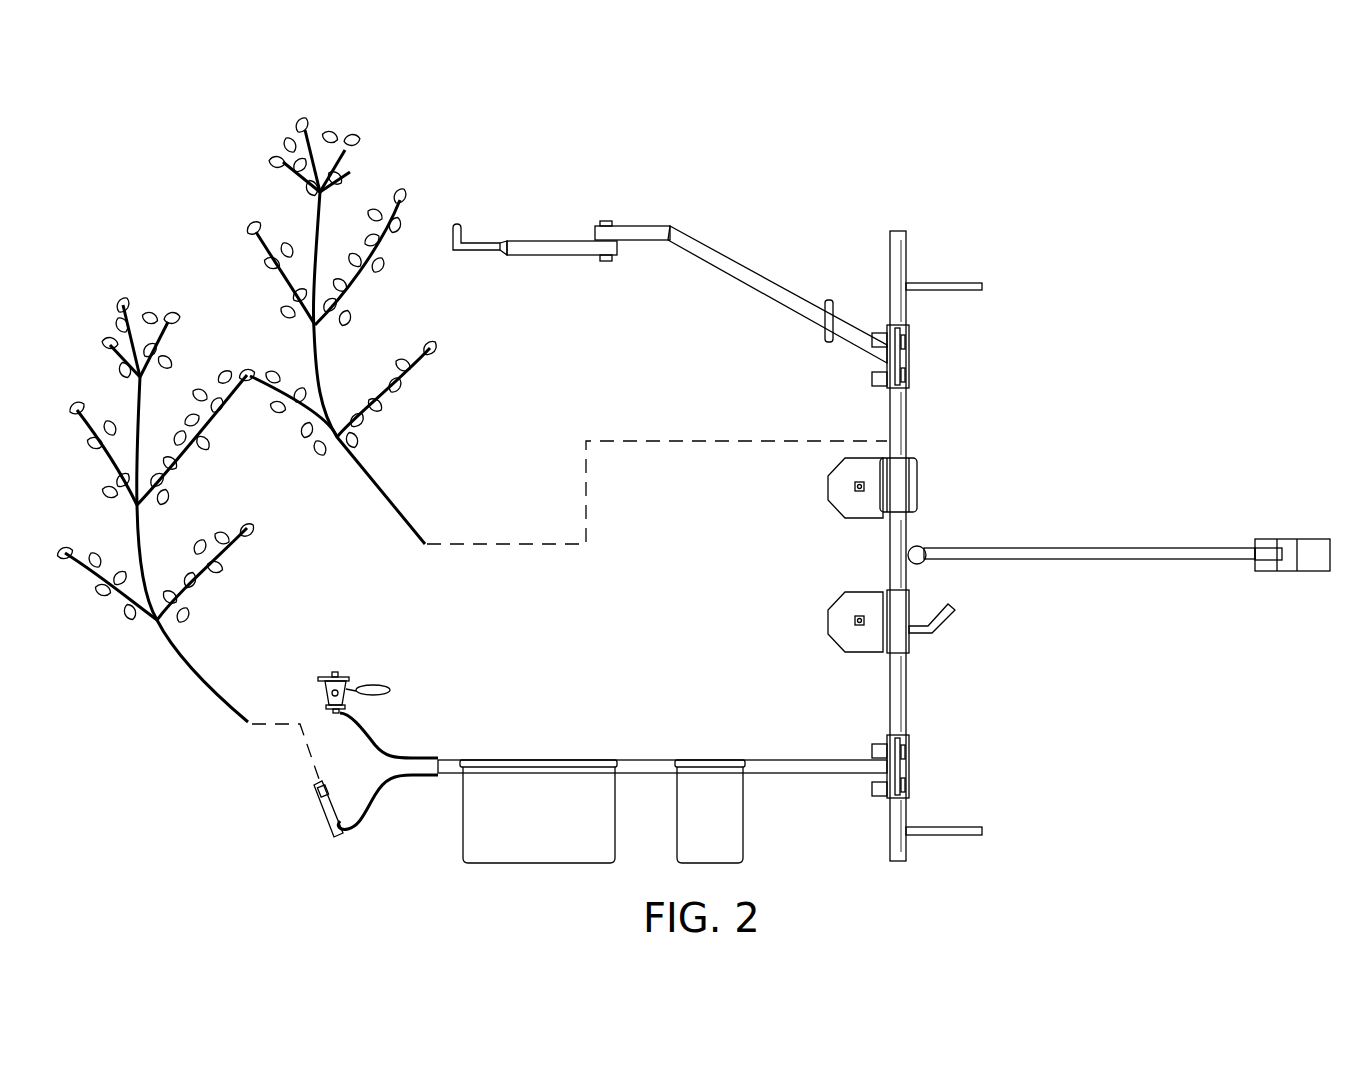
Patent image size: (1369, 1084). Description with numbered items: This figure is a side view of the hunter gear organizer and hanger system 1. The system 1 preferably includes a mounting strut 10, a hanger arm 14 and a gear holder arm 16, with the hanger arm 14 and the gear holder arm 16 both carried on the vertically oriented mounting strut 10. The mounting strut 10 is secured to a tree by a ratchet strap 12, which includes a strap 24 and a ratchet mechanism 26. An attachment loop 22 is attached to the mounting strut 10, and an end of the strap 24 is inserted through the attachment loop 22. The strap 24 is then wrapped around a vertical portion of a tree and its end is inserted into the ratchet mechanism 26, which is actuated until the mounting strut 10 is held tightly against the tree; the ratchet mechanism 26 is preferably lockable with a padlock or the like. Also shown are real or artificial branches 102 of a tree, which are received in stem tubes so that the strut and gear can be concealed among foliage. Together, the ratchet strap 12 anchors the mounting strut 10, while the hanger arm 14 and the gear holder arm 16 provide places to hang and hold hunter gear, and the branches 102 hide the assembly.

The hunter gear organizer and hanger system 1 is at (1028, 328).
The mounting strut 10 is at (921, 421).
The ratchet strap 12 is at (1124, 497).
The hanger arm 14 is at (742, 245).
The gear holder arm 16 is at (558, 733).
The attachment loop 22 is at (922, 545).
The strap 24 is at (1018, 547).
The ratchet mechanism 26 is at (1290, 571).
The real or artificial branch 102 is at (348, 168).